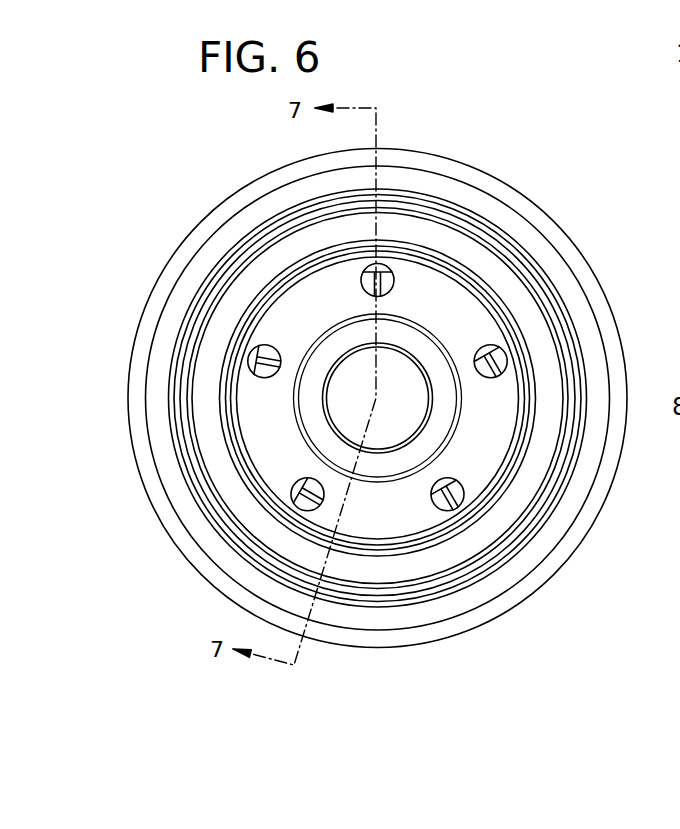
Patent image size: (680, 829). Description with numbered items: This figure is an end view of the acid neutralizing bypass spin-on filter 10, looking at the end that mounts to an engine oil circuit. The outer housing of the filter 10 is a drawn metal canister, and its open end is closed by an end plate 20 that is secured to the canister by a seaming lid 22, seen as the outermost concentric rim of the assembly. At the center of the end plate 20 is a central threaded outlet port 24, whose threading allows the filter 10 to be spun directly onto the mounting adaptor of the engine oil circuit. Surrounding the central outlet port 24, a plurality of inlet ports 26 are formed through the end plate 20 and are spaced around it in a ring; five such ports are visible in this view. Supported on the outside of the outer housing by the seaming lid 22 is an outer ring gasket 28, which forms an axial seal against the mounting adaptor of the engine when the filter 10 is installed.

The filter 10 is at (517, 677).
The end plate 20 is at (463, 458).
The seaming lid 22 is at (466, 566).
The central threaded outlet port 24 is at (346, 360).
The inlet ports 26 is at (503, 346).
The outer ring gasket 28 is at (442, 185).